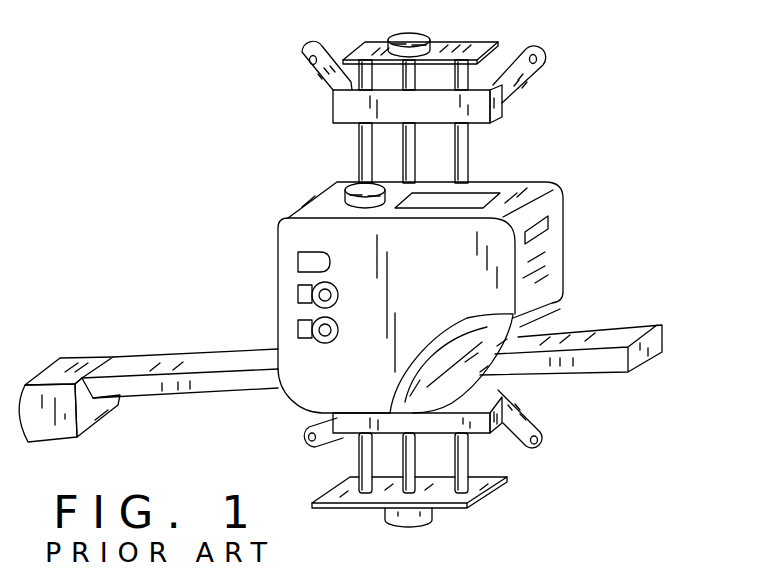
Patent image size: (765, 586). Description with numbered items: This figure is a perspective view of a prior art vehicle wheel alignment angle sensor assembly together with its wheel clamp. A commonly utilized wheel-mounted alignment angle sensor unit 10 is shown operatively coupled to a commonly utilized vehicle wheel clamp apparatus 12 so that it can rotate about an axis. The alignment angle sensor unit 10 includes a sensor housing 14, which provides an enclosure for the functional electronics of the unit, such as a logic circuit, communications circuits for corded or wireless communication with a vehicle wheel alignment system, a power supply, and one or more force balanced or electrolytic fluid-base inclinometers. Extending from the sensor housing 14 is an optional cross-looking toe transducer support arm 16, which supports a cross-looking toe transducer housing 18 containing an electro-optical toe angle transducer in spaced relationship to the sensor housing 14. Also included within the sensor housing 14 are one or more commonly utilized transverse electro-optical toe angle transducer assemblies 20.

The wheel-mounted alignment angle sensor unit 10 is at (355, 280).
The vehicle wheel clamp apparatus 12 is at (544, 88).
The sensor housing 14 is at (473, 288).
The cross-looking toe transducer support arm 16 is at (223, 383).
The cross-looking toe transducer housing 18 is at (45, 430).
The transverse electro-optical toe angle transducer assembly 20 is at (548, 227).